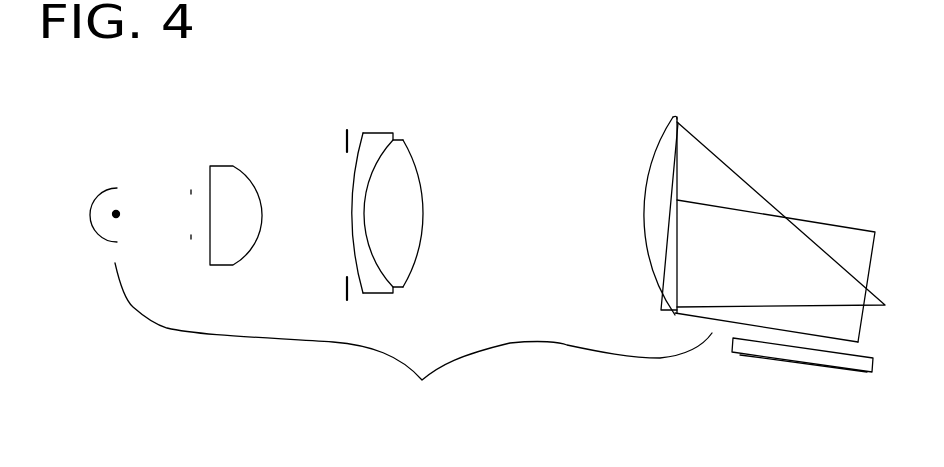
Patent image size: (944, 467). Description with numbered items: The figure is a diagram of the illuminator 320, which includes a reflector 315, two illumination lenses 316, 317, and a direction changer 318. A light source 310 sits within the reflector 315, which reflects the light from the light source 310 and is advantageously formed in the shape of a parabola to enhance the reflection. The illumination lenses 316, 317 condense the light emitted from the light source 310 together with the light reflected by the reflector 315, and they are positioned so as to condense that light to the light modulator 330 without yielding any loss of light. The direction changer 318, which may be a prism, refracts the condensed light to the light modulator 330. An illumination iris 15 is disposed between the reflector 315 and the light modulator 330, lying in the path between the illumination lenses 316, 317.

The illumination iris 15 is at (342, 132).
The light source 310 is at (125, 208).
The reflector 315 is at (98, 192).
The illumination lens 316 is at (222, 162).
The illumination lens 317 is at (393, 133).
The direction changer 318 is at (650, 152).
The illuminator 320 is at (413, 336).
The light modulator 330 is at (862, 380).